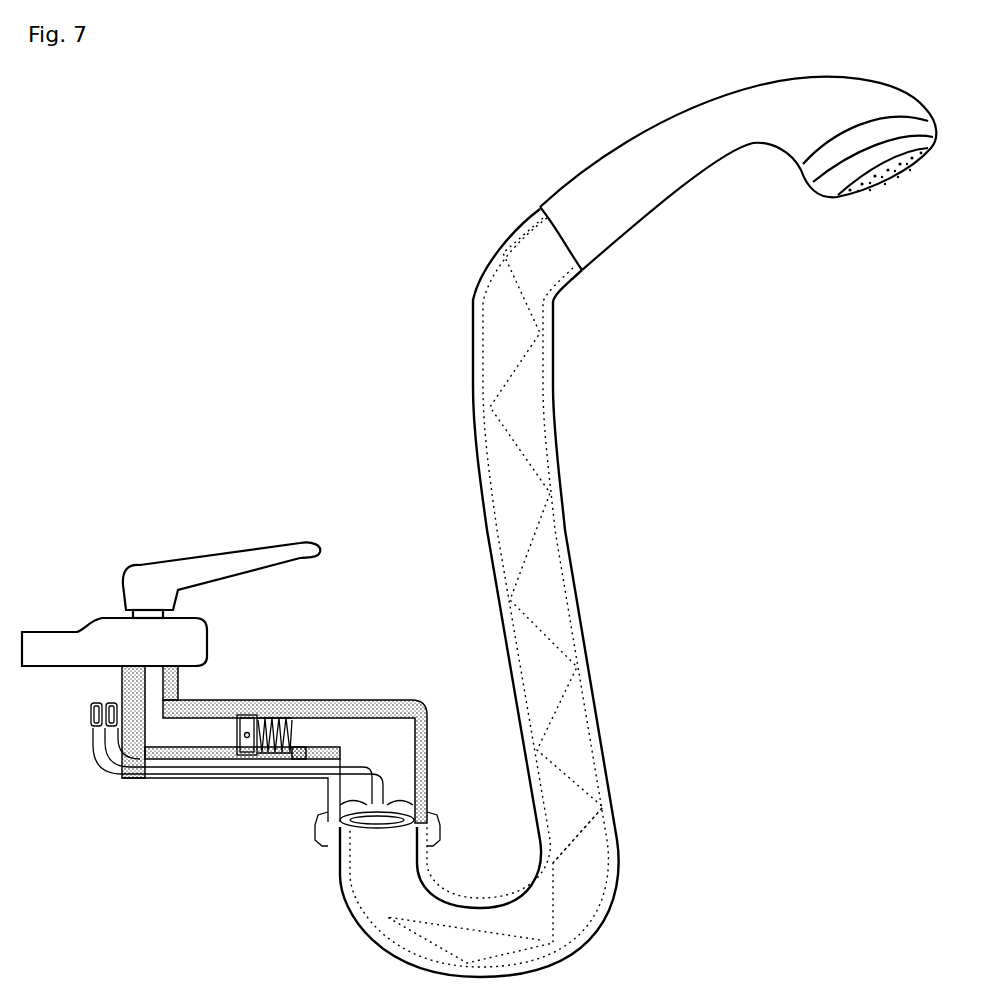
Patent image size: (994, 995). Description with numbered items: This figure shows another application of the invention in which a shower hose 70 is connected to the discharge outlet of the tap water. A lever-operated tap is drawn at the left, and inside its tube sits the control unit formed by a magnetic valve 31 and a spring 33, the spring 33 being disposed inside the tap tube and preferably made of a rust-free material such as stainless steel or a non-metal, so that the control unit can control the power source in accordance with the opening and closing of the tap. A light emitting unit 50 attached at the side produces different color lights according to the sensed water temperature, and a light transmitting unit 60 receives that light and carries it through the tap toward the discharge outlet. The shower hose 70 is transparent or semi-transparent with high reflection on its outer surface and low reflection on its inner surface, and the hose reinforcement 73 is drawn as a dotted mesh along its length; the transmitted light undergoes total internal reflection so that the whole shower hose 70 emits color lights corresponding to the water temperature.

The shower hose 70 is at (586, 638).
The hose mesh / reinforcement 73 is at (570, 552).
The light emitting unit 50 is at (89, 720).
The light transmitting unit 60 is at (96, 762).
The magnetic valve 31 is at (233, 752).
The spring 33 is at (285, 753).